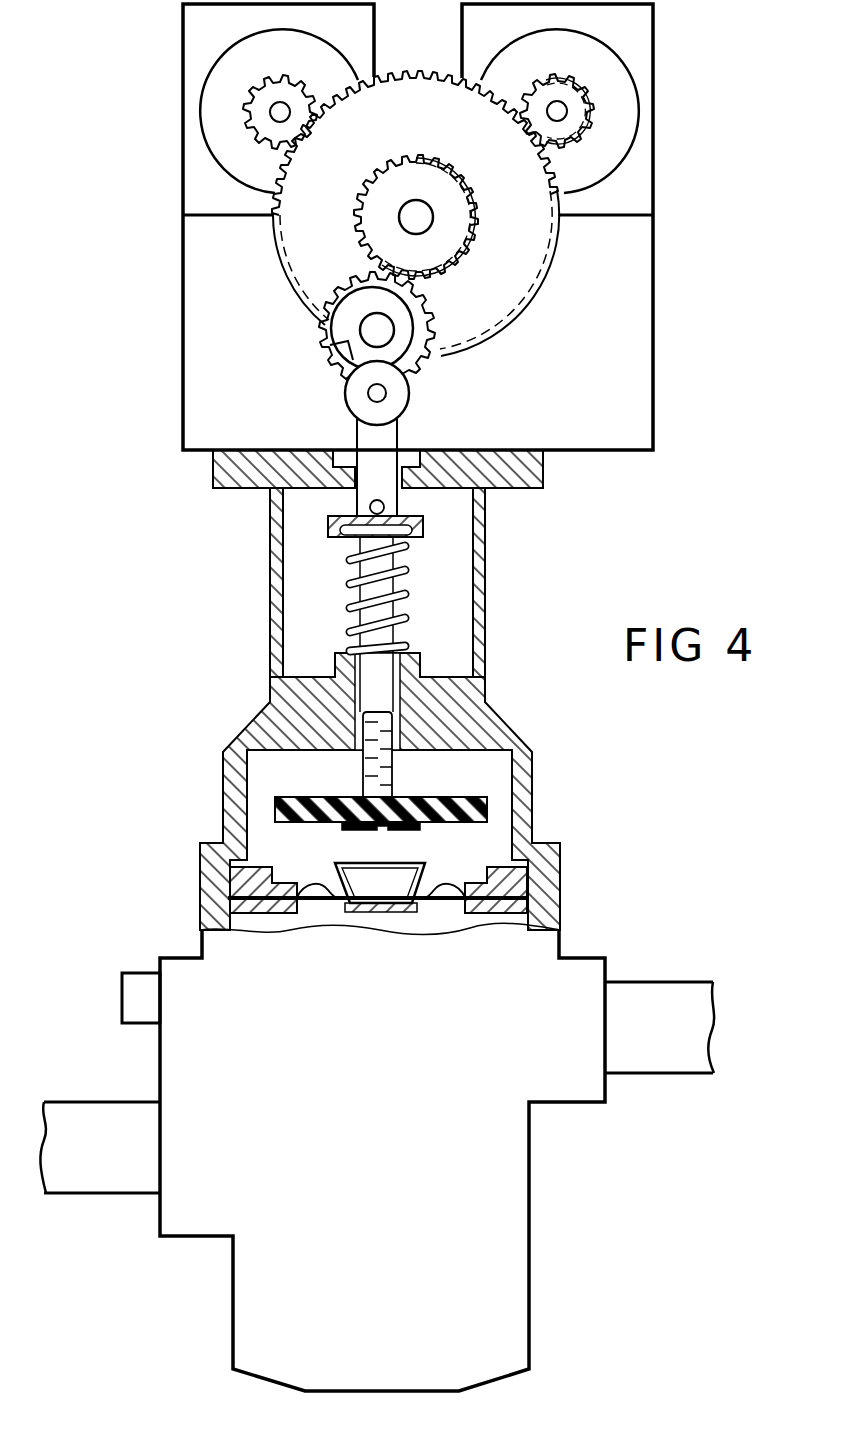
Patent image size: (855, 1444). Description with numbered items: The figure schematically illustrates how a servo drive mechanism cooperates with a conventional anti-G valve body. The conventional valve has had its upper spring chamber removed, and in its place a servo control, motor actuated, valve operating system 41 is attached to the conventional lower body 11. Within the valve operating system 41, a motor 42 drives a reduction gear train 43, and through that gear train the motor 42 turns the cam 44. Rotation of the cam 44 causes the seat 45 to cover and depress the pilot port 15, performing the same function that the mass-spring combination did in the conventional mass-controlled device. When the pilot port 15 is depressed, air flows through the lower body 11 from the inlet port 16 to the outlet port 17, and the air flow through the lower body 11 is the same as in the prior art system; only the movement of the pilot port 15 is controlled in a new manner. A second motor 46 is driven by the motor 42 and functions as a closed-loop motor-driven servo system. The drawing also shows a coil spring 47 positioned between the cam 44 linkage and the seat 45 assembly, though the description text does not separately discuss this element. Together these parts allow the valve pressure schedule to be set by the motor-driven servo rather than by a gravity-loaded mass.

The lower body 11 is at (531, 1267).
The pilot port 15 is at (385, 899).
The inlet port 16 is at (124, 1195).
The outlet port 17 is at (676, 984).
The servo control, motor actuated, valve operating system 41 is at (183, 340).
The motor 42 is at (632, 78).
The reduction gear train 43 is at (553, 263).
The cam 44 is at (403, 345).
The seat 45 is at (463, 822).
The second motor 46 is at (197, 113).
The spring 47 is at (355, 620).